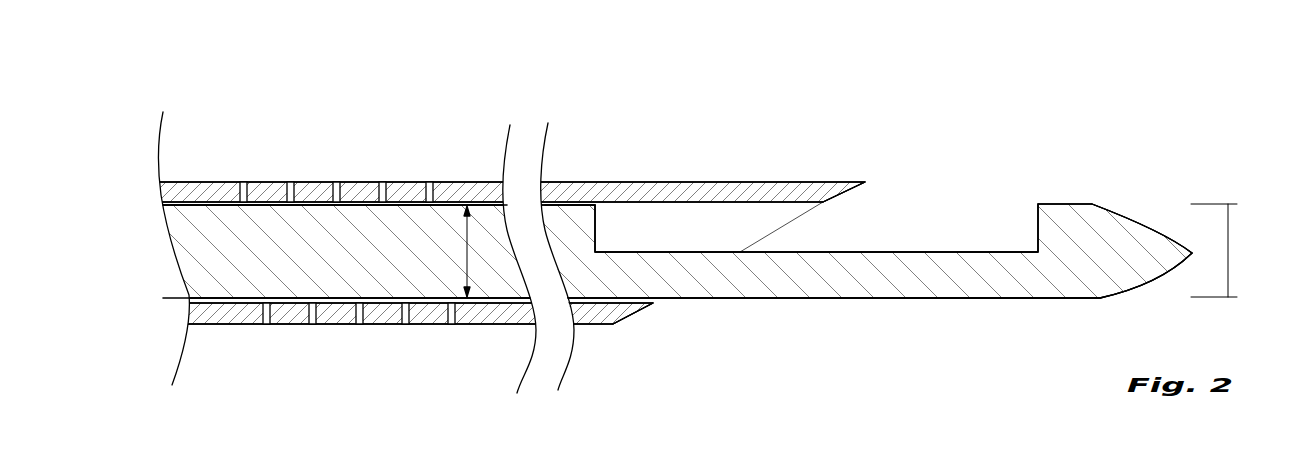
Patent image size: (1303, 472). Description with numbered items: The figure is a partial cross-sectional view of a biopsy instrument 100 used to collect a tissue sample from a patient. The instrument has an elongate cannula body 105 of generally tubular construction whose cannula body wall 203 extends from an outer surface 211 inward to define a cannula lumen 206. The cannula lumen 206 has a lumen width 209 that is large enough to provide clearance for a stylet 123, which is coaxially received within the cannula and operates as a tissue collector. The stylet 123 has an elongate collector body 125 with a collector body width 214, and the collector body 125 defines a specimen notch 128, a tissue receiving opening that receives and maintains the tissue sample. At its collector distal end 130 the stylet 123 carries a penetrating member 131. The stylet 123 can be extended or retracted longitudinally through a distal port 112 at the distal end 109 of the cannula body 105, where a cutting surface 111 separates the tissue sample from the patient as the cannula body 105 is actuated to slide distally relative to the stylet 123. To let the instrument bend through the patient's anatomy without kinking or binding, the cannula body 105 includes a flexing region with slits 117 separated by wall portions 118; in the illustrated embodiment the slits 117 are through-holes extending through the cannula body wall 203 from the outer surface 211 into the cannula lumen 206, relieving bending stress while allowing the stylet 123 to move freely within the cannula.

The biopsy instrument 100 is at (688, 232).
The outer surface 211 is at (200, 181).
The wall portions 118 is at (403, 181).
The lumen width 209 is at (465, 244).
The cannula body wall 203 is at (653, 181).
The distal end 109 is at (860, 182).
The cutting surface 111 is at (847, 191).
The specimen notch 128 is at (979, 208).
The penetrating member 131 is at (1135, 213).
The collector body width 214 is at (1228, 262).
The collector distal end 130 is at (1192, 263).
The elongate collector body 125 is at (1020, 300).
The stylet 123 is at (885, 299).
The distal port 112 is at (655, 300).
The cannula lumen 206 is at (485, 300).
The slits 117 is at (452, 324).
The cannula body 105 is at (242, 325).